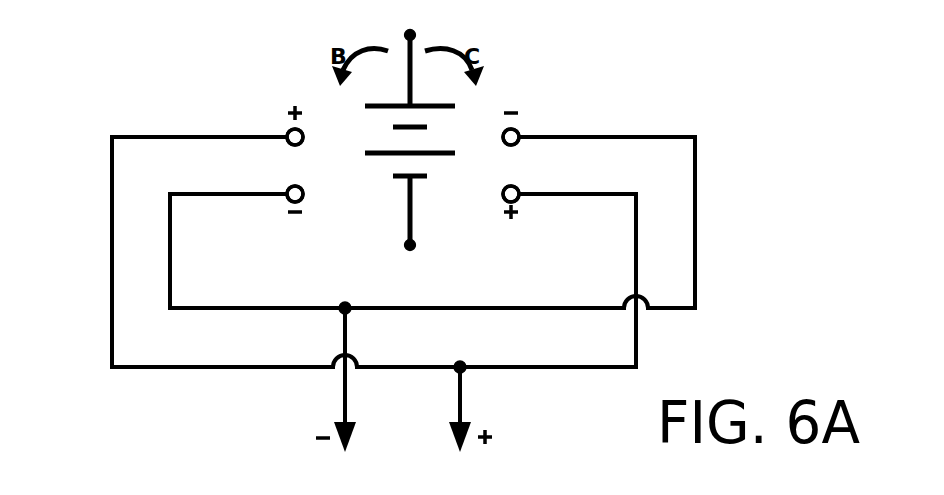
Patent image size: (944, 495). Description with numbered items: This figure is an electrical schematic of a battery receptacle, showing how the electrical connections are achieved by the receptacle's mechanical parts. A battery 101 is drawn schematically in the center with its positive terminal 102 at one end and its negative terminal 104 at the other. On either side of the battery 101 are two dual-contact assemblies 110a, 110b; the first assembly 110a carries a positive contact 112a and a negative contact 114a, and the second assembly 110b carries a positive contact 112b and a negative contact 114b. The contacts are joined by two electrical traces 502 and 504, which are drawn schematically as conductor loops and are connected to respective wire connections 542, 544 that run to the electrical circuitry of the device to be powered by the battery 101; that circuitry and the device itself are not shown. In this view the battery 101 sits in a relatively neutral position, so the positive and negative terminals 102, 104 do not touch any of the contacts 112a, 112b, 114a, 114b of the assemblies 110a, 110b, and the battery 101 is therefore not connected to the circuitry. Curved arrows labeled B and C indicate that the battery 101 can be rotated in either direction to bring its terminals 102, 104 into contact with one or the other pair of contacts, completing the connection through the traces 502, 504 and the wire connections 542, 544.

The battery 101 is at (388, 160).
The positive terminal 102 is at (416, 33).
The negative terminal 104 is at (417, 245).
The dual-contact assembly 110a is at (264, 78).
The dual-contact assembly 110b is at (533, 81).
The positive contact 112a is at (287, 132).
The positive contact 112b is at (518, 199).
The negative contact 114a is at (288, 200).
The negative contact 114b is at (518, 130).
The electrical trace 502 is at (110, 303).
The electrical trace 504 is at (697, 221).
The wire connection 542 is at (463, 400).
The wire connection 544 is at (343, 410).